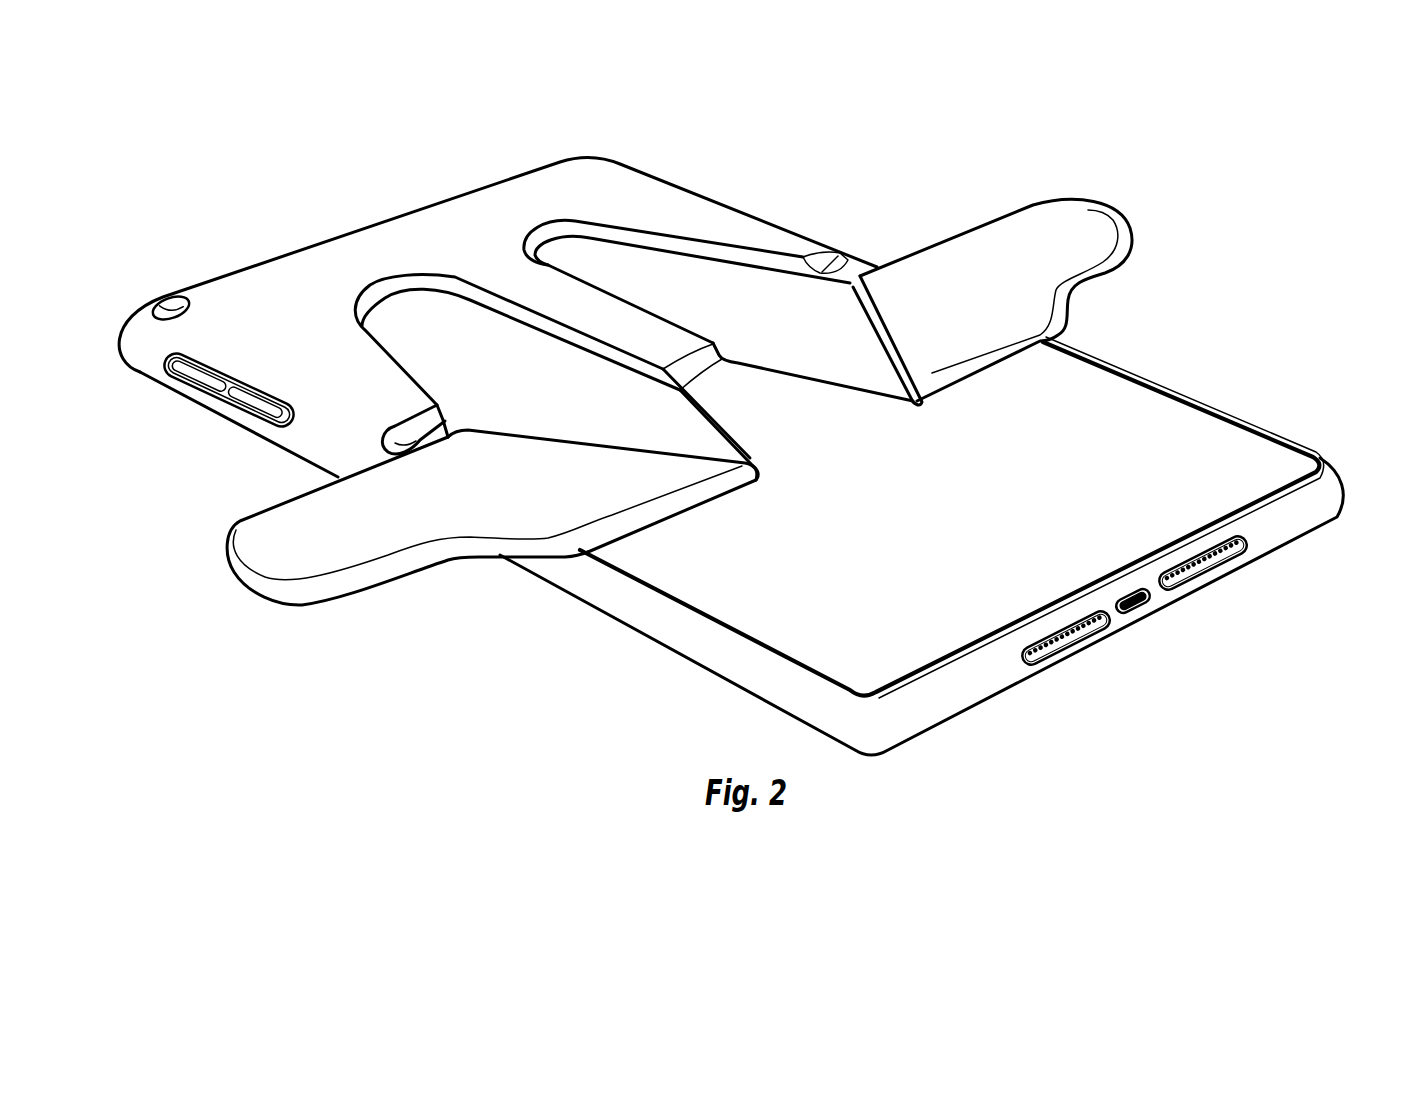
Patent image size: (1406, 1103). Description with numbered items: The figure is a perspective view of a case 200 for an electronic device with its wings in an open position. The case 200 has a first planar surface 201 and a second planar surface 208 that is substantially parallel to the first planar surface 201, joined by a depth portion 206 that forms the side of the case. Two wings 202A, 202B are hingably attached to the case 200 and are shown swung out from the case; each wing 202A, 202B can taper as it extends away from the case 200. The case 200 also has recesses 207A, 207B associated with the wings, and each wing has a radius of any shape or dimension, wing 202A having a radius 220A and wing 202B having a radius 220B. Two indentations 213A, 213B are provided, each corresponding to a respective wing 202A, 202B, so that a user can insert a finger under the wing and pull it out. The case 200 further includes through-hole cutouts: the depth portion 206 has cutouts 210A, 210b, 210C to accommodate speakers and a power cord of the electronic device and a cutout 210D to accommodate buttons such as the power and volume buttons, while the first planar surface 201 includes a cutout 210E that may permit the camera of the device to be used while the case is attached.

The case 200 is at (663, 397).
The planar surface 201 is at (621, 187).
The wing 202A is at (1030, 292).
The wing 202B is at (492, 552).
The depth portion 206 is at (949, 546).
The recess 207A is at (723, 307).
The recess 207B is at (398, 330).
The second planar surface 208 is at (1264, 460).
The cutout 210A is at (1077, 639).
The cutout 210b is at (1147, 606).
The cutout 210C is at (1228, 561).
The cutout 210D is at (193, 370).
The cutout 210E is at (163, 312).
The indentation 213A is at (856, 266).
The indentation 213B is at (383, 428).
The radius 220A is at (1095, 268).
The radius 220B is at (436, 560).